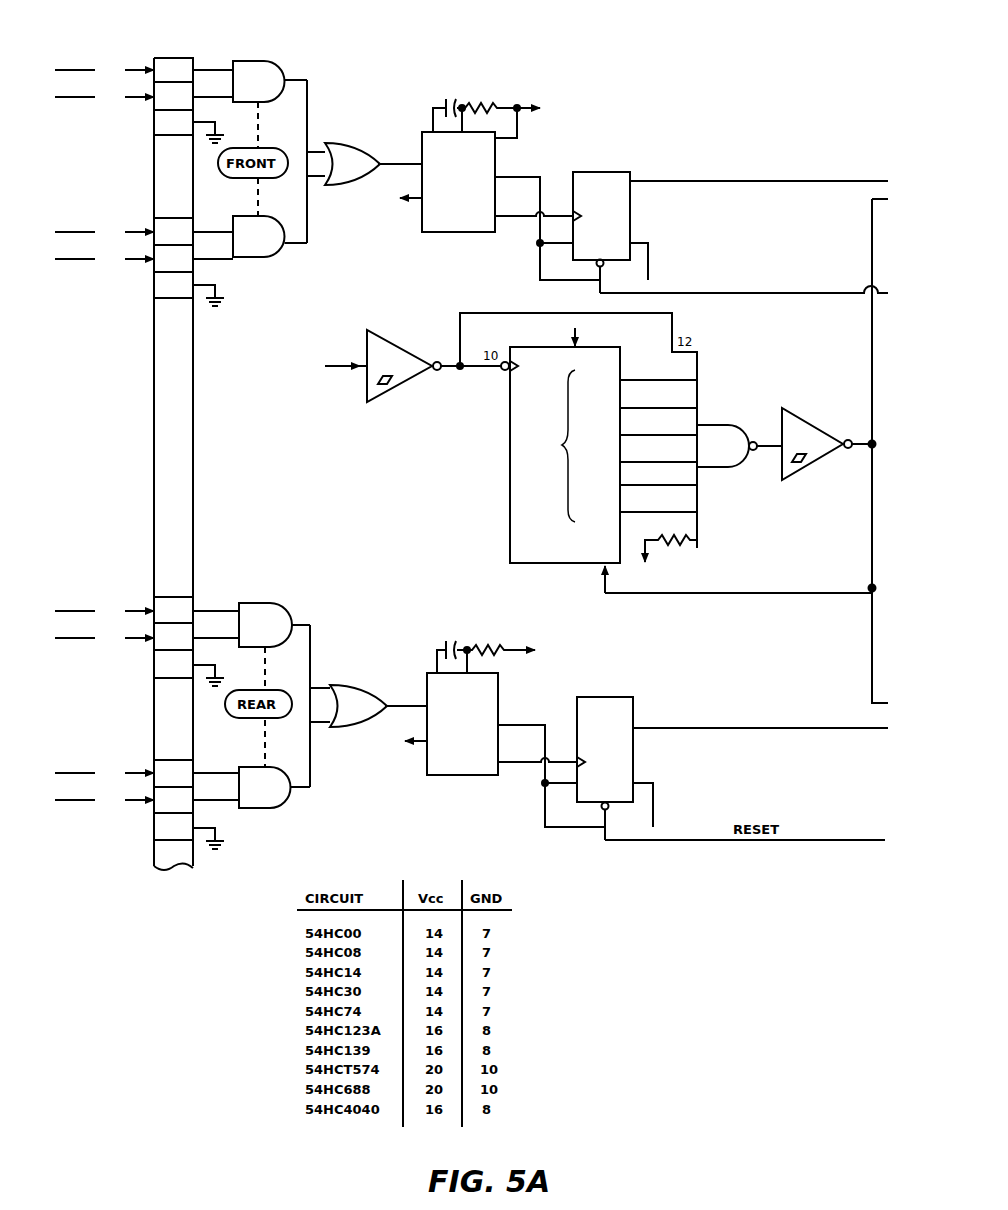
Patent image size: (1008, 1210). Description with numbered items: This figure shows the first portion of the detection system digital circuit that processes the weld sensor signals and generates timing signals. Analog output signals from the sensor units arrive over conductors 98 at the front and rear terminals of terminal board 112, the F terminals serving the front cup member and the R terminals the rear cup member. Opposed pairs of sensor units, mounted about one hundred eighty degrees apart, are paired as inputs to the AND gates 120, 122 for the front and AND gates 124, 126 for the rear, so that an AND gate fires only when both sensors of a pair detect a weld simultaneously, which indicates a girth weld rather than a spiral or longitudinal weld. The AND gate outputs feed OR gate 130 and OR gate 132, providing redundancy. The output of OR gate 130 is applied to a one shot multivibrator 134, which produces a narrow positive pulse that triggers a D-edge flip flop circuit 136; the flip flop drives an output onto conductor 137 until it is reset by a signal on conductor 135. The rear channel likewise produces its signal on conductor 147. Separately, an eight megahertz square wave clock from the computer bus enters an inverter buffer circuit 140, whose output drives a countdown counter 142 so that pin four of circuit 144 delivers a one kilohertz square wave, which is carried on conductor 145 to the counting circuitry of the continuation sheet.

The conductors 98 is at (85, 70).
The terminal board 112 is at (157, 865).
The AND gate 120 is at (245, 60).
The AND gate 122 is at (250, 258).
The AND gate 124 is at (250, 602).
The AND gate 126 is at (255, 808).
The OR gate 130 is at (355, 185).
The OR gate 132 is at (350, 727).
The one shot multivibrator 134 is at (440, 232).
The conductor 135 is at (730, 293).
The D-edge flip flop circuit 136 is at (630, 213).
The conductor 137 is at (740, 181).
The inverter buffer circuit 140 is at (367, 398).
The countdown counter 142 is at (510, 492).
The circuit 144 is at (786, 482).
The conductor 145 is at (872, 524).
The conductor 147 is at (805, 728).